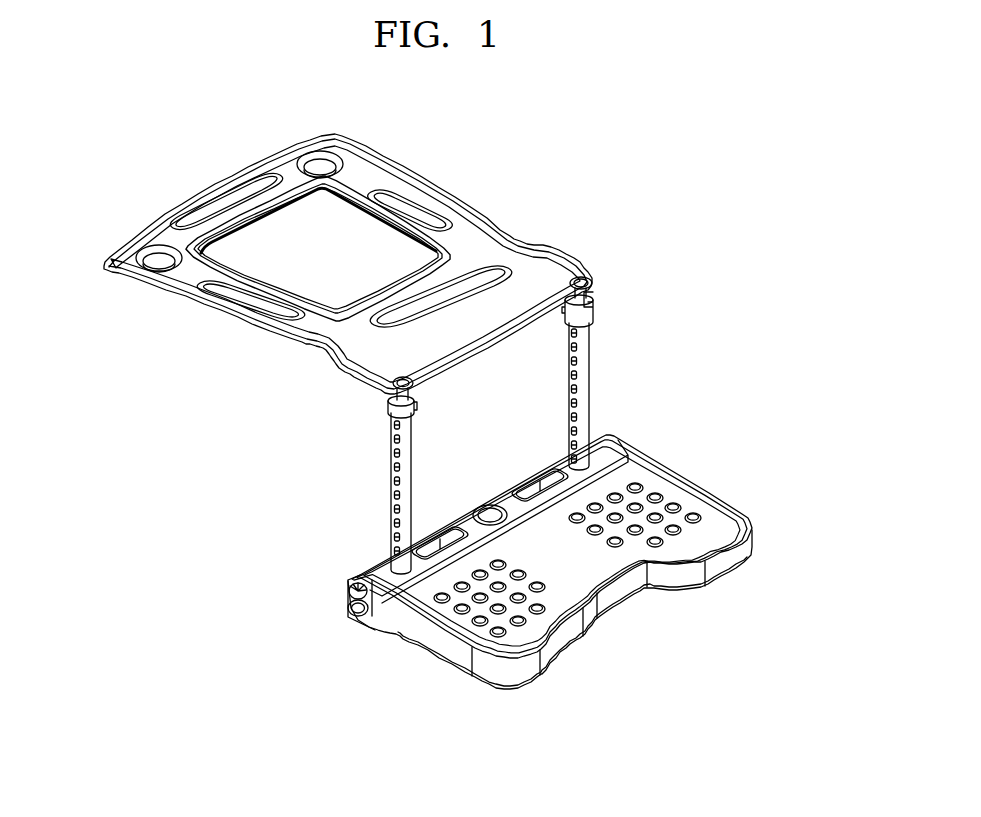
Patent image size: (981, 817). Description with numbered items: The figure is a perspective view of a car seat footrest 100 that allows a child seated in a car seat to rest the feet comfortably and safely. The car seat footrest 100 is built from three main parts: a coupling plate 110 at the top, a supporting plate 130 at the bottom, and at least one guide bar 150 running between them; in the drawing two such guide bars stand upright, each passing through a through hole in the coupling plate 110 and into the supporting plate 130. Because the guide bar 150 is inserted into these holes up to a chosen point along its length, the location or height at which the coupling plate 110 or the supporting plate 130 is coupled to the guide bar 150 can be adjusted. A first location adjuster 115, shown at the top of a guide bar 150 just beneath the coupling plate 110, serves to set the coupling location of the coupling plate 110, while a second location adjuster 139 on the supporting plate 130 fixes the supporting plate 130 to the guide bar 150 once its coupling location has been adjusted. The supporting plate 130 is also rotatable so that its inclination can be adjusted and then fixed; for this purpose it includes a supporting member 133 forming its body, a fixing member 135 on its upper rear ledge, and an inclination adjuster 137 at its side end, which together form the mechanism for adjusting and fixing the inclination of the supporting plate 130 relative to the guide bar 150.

The car seat footrest 100 is at (597, 176).
The coupling plate 110 is at (440, 195).
The first location adjuster 115 is at (625, 288).
The supporting plate 130 is at (214, 498).
The supporting member 133 is at (447, 661).
The fixing member 135 is at (383, 566).
The inclination adjuster 137 is at (325, 601).
The second location adjuster 139 is at (455, 502).
The guide bar 150 is at (587, 390).